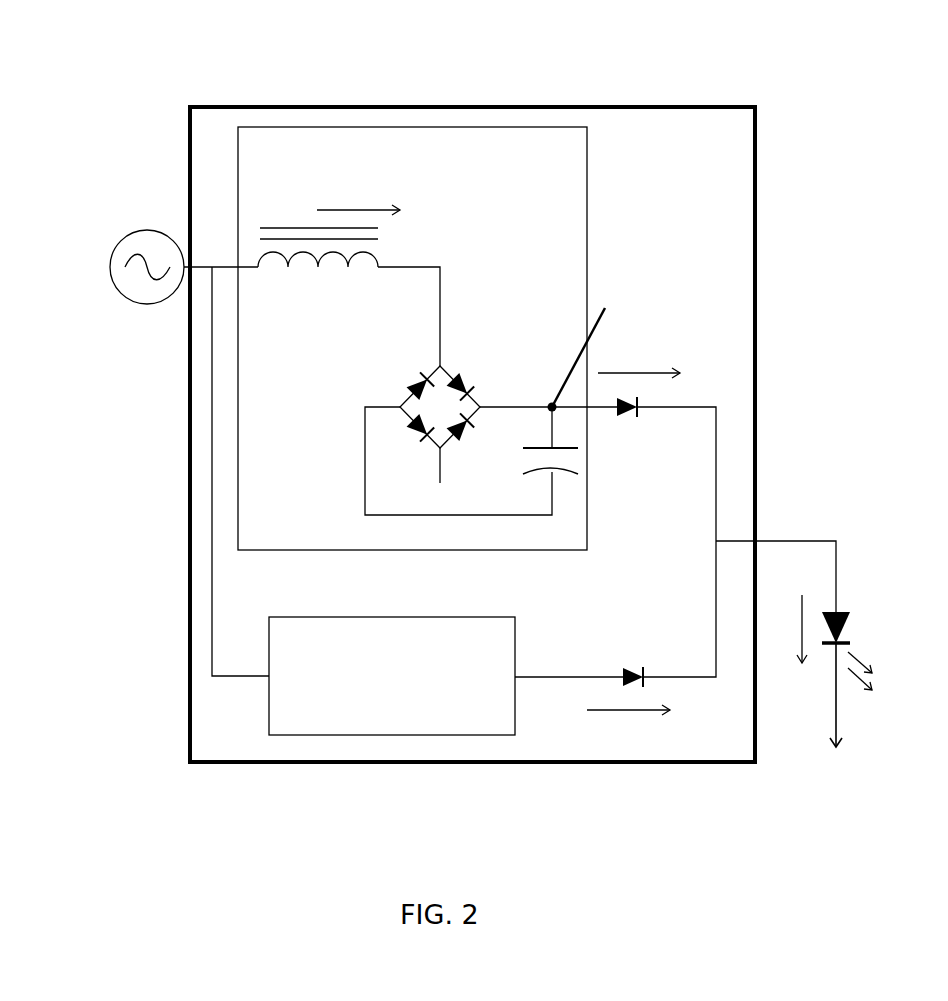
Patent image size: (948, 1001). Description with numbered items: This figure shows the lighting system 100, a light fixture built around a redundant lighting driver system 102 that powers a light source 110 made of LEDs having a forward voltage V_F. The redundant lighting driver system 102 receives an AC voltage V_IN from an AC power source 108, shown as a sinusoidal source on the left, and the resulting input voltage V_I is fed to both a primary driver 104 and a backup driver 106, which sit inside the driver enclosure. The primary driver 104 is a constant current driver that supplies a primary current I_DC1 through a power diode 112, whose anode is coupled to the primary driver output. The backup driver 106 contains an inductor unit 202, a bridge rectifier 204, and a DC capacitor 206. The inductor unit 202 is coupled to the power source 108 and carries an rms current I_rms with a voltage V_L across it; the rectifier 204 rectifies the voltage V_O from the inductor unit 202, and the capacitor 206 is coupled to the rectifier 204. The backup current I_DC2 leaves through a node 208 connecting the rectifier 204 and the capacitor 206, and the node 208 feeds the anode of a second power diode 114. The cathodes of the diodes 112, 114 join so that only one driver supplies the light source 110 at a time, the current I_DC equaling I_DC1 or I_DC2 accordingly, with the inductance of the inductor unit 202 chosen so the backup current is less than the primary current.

The lighting system 100 is at (140, 74).
The redundant lighting driver system 102 is at (190, 167).
The primary driver 104 is at (303, 736).
The backup driver 106 is at (282, 128).
The AC power source 108 is at (130, 228).
The light source 110 is at (843, 612).
The power diode 112 is at (643, 677).
The power diode 114 is at (638, 403).
The inductor unit 202 is at (316, 262).
The rectifier 204 is at (443, 366).
The capacitor 206 is at (565, 475).
The node 208 is at (556, 410).